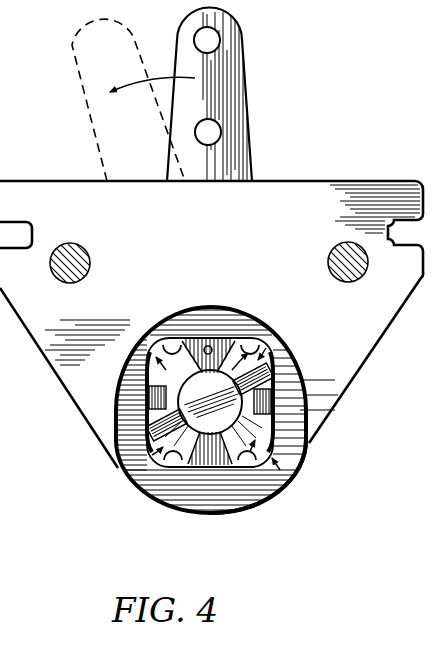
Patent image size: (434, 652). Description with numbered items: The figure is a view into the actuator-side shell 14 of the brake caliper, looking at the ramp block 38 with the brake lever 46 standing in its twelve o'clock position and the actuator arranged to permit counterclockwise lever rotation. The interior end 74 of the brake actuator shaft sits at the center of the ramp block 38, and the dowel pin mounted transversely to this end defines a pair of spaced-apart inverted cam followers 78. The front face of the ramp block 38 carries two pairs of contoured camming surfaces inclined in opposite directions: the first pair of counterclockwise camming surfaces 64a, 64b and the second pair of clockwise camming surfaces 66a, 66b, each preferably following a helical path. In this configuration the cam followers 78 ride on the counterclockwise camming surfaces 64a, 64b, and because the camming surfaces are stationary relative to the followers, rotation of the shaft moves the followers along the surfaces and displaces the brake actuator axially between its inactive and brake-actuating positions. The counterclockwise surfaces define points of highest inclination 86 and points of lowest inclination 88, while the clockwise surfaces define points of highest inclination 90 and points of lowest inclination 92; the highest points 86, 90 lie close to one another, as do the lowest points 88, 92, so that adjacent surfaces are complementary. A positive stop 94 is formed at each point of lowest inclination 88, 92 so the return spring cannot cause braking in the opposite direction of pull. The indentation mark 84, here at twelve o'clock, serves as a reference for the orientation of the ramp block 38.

The actuator-side shell 14 is at (378, 187).
The brake lever 46 is at (233, 92).
The clockwise contoured camming surface 66a is at (135, 350).
The clockwise contoured camming surface 66b is at (255, 440).
The inverted cam followers 78 is at (262, 338).
The points of lowest inclination 92 is at (140, 367).
The ramp block 38 is at (188, 335).
The indentation mark 84 is at (213, 346).
The points of lowest inclination 88 is at (275, 365).
The positive stop 94 is at (268, 398).
The interior end of brake actuator shaft 74 is at (222, 409).
The points of highest inclination 86 is at (242, 355).
The points of highest inclination 90 is at (163, 345).
The counterclockwise contoured camming surface 64a is at (265, 358).
The counterclockwise contoured camming surface 64b is at (170, 437).